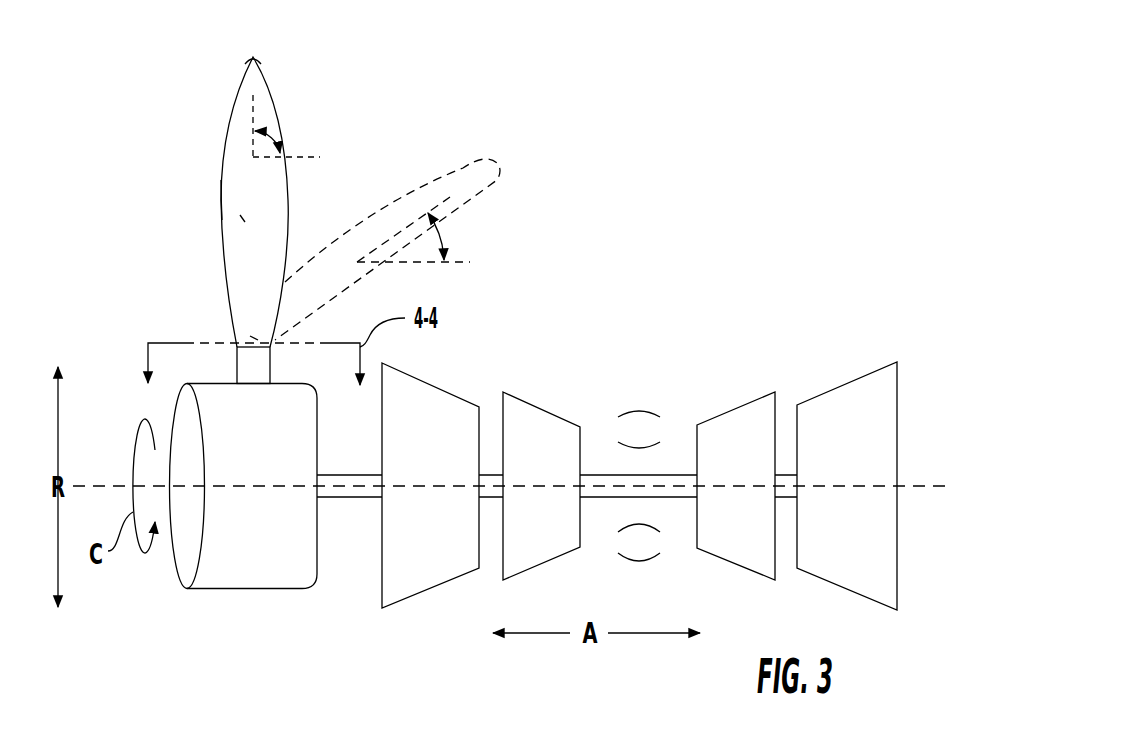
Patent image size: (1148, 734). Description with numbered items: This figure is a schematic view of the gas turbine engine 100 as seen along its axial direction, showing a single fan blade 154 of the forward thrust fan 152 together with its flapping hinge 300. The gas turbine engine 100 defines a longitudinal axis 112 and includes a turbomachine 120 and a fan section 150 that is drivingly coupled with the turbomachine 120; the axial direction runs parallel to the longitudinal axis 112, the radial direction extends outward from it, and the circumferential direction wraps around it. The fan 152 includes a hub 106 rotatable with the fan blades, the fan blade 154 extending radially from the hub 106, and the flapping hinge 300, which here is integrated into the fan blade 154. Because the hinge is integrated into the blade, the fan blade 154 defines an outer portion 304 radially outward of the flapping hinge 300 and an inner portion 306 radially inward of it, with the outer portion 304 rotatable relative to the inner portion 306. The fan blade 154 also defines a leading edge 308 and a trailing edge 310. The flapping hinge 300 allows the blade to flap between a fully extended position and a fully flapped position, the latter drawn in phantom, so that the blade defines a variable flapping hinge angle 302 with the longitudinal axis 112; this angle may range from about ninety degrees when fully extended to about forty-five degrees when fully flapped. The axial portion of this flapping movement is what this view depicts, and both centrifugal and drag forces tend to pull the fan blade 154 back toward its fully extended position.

The gas turbine engine 100 is at (820, 185).
The hub 106 is at (243, 577).
The longitudinal axis 112 is at (125, 484).
The turbomachine 120 is at (680, 337).
The fan section 150 is at (177, 62).
The fan 152 is at (132, 272).
The fan blade 154 is at (267, 118).
The flapping hinge 300 is at (255, 338).
The flapping hinge angle 302 is at (260, 132).
The outer portion 304 is at (242, 218).
The inner portion 306 is at (268, 342).
The leading edge 308 is at (220, 197).
The trailing edge 310 is at (275, 95).